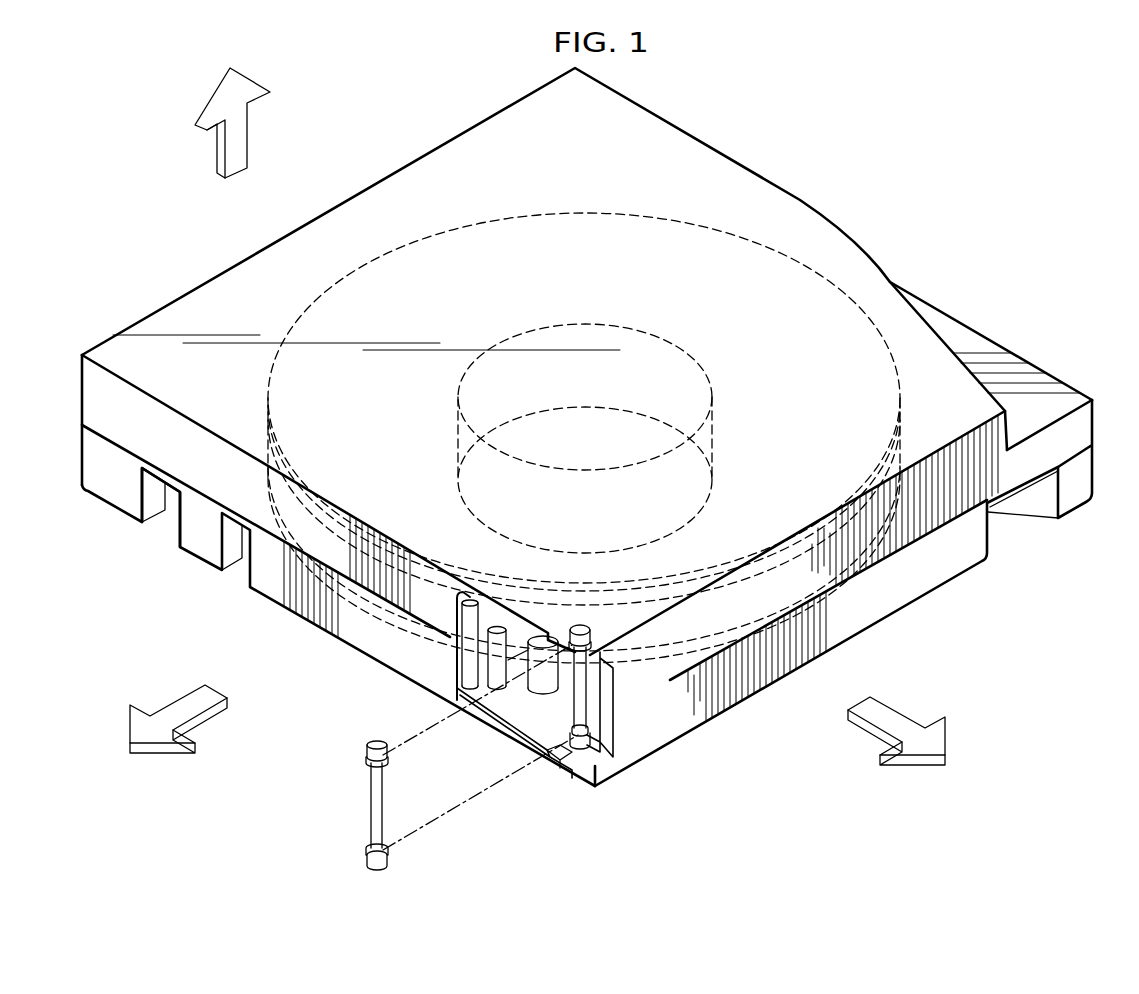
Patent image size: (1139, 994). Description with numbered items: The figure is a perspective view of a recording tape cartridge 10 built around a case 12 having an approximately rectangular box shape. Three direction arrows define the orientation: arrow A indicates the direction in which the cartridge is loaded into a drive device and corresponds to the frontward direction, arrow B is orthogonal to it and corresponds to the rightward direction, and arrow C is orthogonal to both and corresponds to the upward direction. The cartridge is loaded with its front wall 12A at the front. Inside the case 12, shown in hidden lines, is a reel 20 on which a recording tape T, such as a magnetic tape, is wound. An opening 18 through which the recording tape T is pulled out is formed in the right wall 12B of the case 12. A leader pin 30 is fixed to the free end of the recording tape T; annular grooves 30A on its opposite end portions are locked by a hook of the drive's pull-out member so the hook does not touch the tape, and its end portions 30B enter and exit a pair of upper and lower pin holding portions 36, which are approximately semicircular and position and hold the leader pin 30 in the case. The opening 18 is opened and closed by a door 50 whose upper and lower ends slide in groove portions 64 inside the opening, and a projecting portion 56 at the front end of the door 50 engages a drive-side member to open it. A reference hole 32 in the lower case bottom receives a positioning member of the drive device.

The recording tape cartridge 10 is at (587, 427).
The case 12 is at (968, 320).
The front wall 12A is at (897, 590).
The right wall 12B is at (200, 542).
The opening 18 is at (479, 709).
The reel 20 is at (585, 213).
The leader pin 30 is at (509, 763).
The annular grooves 30A is at (368, 765).
The end portions of the leader pin 30B is at (366, 742).
The reference hole 32 is at (595, 747).
The pin holding portions 36 is at (558, 753).
The door 50 is at (458, 667).
The projecting portion 56 is at (425, 646).
The groove portions 64 is at (576, 626).
The arrow A is at (890, 715).
The arrow B is at (198, 703).
The arrow C is at (240, 138).
The recording tape T is at (457, 806).